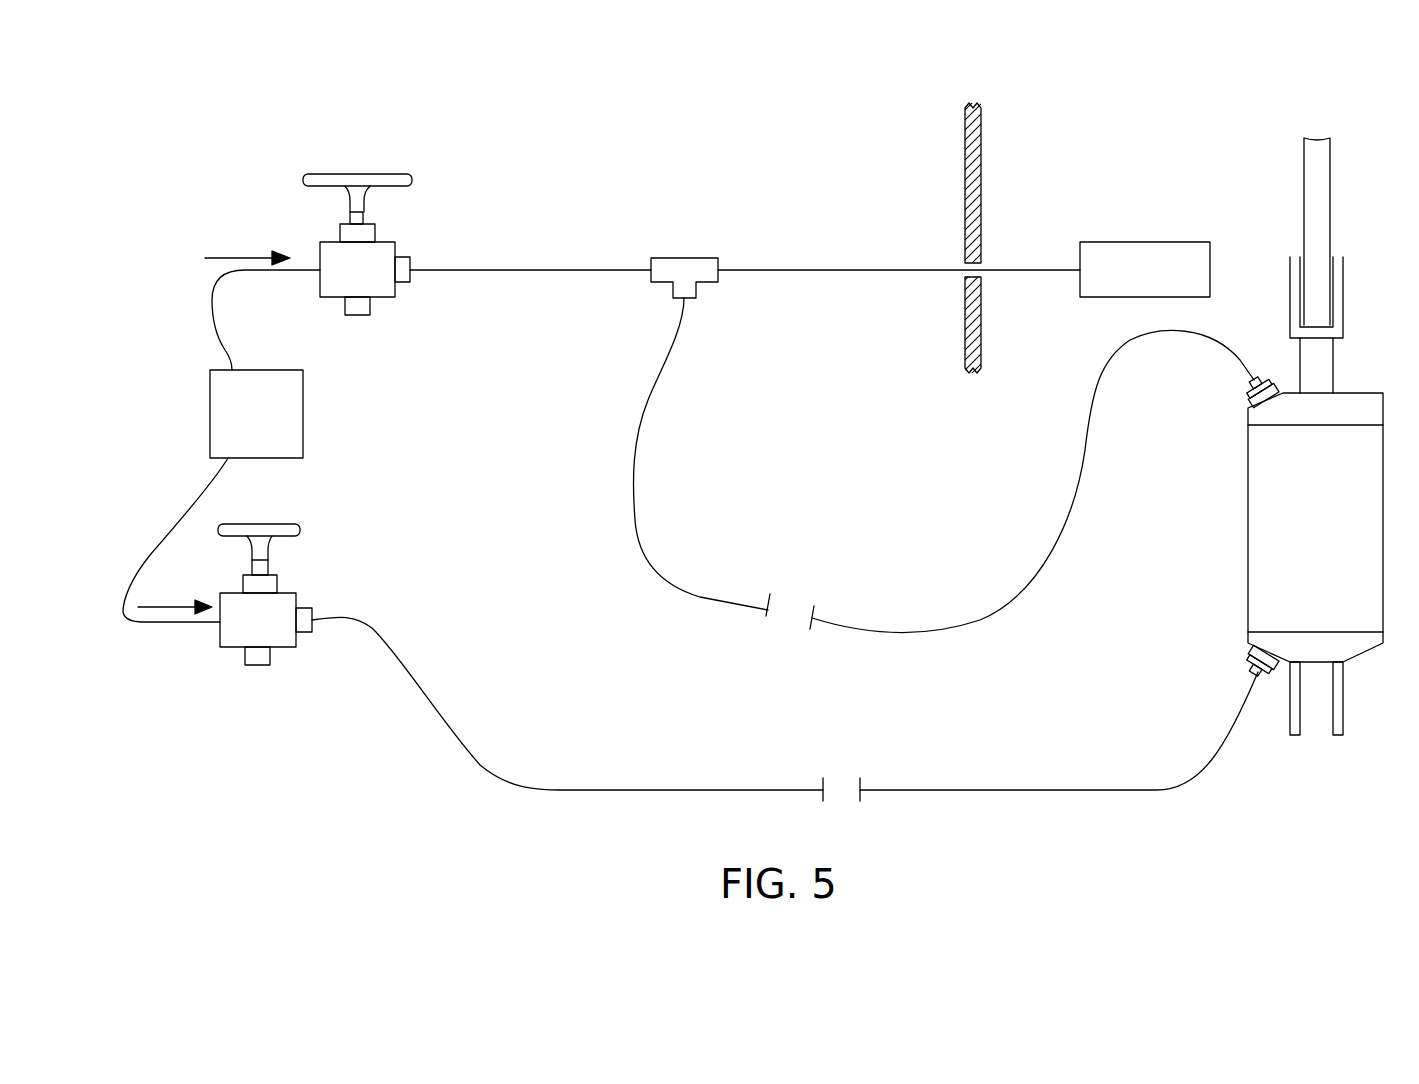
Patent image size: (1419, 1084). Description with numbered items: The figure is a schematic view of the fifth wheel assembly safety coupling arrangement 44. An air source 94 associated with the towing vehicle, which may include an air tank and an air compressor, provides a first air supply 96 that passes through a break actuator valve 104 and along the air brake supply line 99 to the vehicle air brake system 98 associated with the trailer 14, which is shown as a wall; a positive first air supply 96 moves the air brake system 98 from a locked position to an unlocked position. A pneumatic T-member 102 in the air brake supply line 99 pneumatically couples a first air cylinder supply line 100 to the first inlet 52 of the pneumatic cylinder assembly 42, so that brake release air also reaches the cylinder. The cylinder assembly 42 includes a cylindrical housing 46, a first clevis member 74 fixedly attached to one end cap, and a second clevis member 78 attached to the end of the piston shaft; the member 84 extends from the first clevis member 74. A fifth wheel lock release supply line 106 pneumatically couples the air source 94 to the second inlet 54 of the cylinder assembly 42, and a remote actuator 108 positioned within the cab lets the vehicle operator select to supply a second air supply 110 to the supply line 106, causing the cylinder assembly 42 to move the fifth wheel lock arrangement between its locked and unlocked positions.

The fifth wheel assembly safety coupling arrangement 44 is at (560, 148).
The first air supply 96 is at (235, 258).
The break actuator valve 104 is at (387, 250).
The air brake supply line 99 is at (818, 270).
The pneumatic T-member 102 is at (686, 258).
The trailer 14 is at (958, 174).
The vehicle air brake system 98 is at (1147, 242).
The inner tube 84 is at (1309, 199).
The first clevis member 74 is at (1297, 300).
The pneumatic cylinder assembly 42 is at (1240, 523).
The cylindrical housing 46 is at (1247, 578).
The second clevis member 78 is at (1341, 692).
The first inlet 52 is at (1252, 397).
The second inlet 54 is at (1245, 657).
The first air cylinder supply line 100 is at (992, 607).
The air source 94 is at (303, 410).
The second air supply 110 is at (168, 607).
The remote actuator 108 is at (287, 592).
The fifth wheel lock release supply line 106 is at (628, 790).